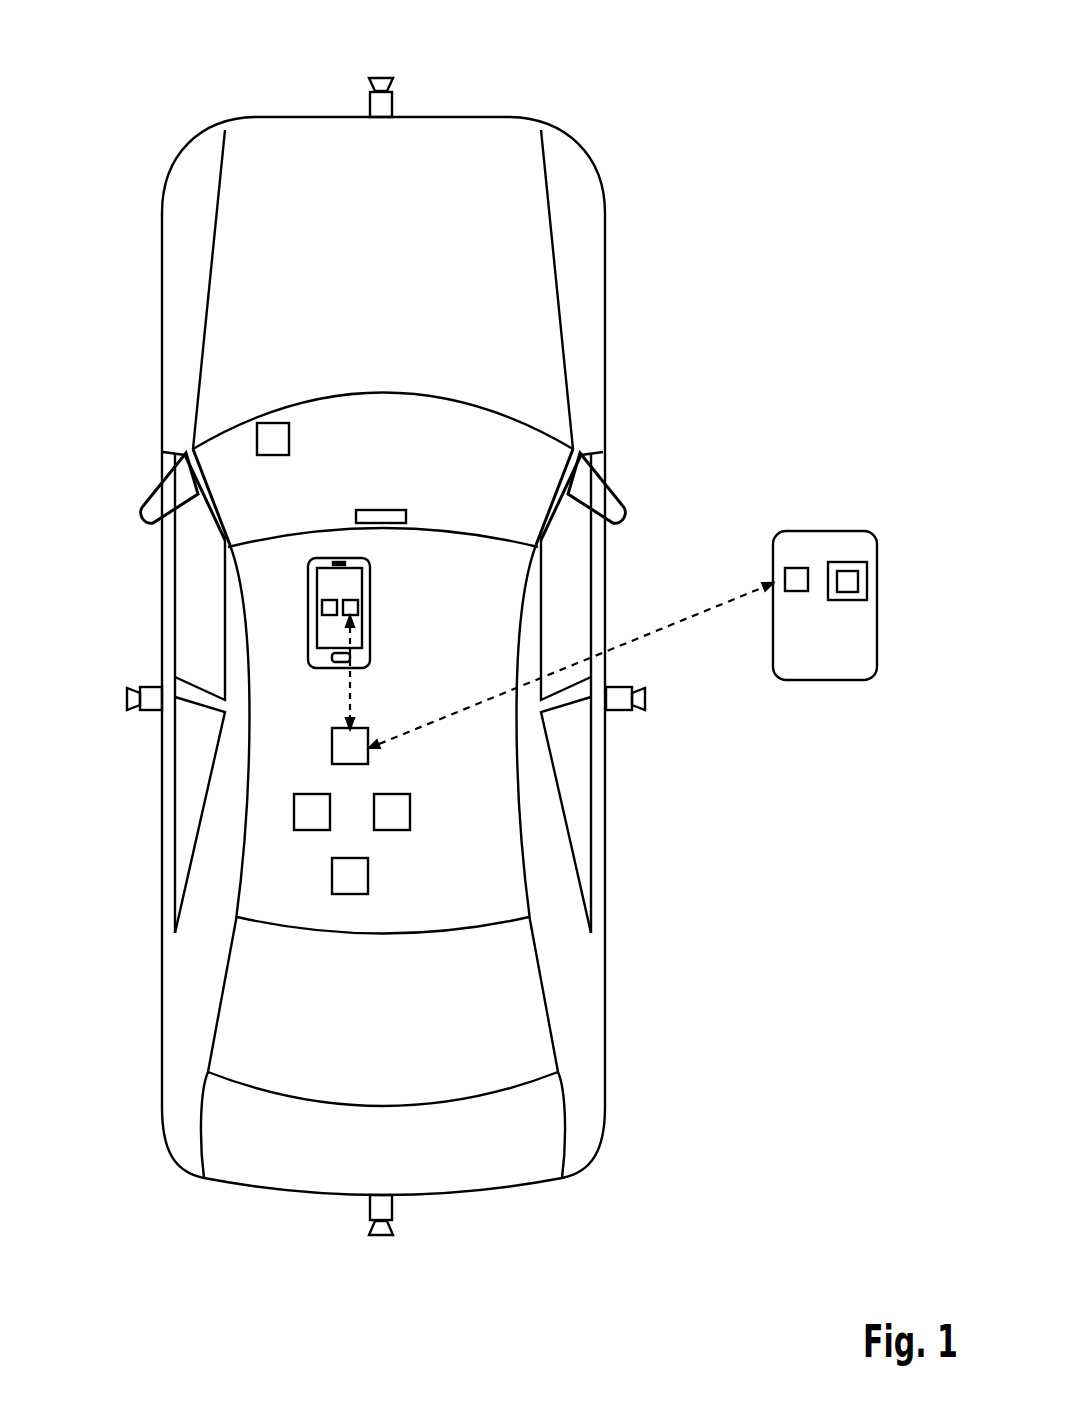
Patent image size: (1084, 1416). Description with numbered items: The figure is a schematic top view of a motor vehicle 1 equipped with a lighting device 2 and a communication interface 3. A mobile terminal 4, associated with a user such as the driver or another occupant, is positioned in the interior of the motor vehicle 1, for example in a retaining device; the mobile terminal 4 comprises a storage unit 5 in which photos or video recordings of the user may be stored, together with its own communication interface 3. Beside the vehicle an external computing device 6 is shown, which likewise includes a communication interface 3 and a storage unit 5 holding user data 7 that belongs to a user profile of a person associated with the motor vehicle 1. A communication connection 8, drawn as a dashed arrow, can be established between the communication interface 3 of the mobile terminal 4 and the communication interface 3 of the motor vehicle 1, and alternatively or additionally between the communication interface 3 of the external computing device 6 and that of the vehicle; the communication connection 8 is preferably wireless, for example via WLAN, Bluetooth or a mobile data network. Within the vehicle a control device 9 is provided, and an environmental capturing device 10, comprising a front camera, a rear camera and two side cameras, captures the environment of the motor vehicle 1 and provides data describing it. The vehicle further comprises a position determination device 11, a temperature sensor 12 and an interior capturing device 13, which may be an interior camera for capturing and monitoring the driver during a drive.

The motor vehicle 1 is at (502, 117).
The lighting device 2 is at (406, 517).
The communication interface 3 is at (358, 609).
The mobile terminal 4 is at (308, 660).
The storage unit 5 is at (322, 608).
The external computing device 6 is at (823, 680).
The user data 7 is at (847, 562).
The communication connection 8 is at (348, 688).
The control device 9 is at (294, 812).
The environmental capturing device 10 is at (380, 77).
The position determination device 11 is at (410, 812).
The temperature sensor 12 is at (332, 878).
The interior capturing device 13 is at (257, 440).